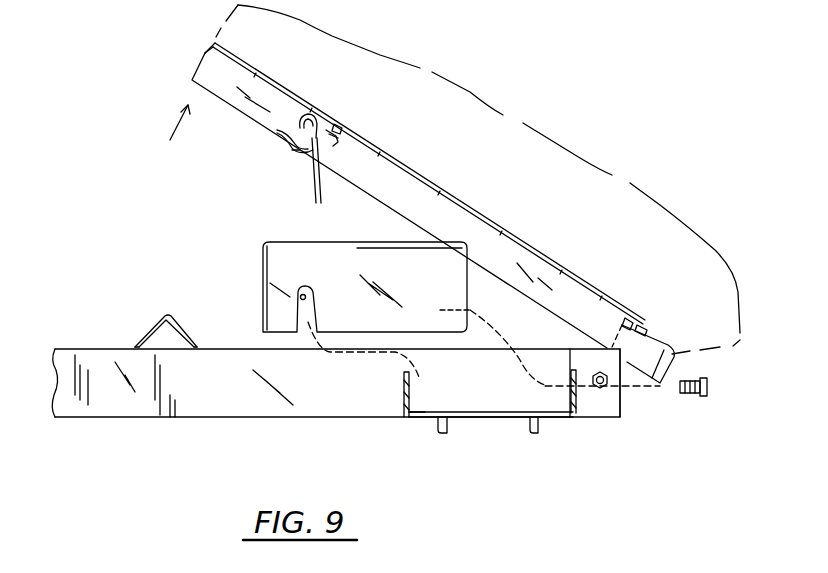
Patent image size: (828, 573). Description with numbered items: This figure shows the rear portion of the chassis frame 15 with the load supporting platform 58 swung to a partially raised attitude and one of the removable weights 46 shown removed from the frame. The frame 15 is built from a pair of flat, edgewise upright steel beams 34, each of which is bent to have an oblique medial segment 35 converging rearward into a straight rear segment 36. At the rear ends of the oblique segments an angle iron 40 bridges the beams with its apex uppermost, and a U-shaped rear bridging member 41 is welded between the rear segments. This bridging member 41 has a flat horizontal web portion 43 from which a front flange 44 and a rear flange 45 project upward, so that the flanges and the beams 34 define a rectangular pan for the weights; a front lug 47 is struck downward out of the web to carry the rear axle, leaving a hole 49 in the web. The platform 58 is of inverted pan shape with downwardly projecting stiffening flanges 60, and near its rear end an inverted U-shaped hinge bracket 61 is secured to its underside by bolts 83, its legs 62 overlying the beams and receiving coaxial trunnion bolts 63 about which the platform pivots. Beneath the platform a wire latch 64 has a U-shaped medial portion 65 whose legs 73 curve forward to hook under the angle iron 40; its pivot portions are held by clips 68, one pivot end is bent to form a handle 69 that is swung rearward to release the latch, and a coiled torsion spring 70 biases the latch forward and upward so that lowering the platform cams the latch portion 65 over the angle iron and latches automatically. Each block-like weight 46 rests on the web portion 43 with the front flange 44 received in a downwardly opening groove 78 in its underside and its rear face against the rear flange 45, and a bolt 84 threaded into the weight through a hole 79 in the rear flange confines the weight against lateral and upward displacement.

The frame 15 is at (622, 418).
The beam 34 is at (240, 420).
The oblique medial segment 35 is at (130, 397).
The rear segment 36 is at (290, 412).
The angle iron 40 is at (152, 320).
The U-shaped rear bridging member 41 is at (399, 415).
The web portion 43 is at (427, 410).
The front flange 44 is at (402, 384).
The rear flange 45 is at (572, 350).
The weight 46 is at (360, 242).
The front lug 47 is at (440, 430).
The hole 49 is at (498, 398).
The load supporting platform 58 is at (446, 198).
The flange 60 is at (534, 278).
The hinge bracket 61 is at (624, 318).
The leg 62 is at (600, 330).
The trunnion bolt 63 is at (610, 380).
The latch 64 is at (275, 149).
The U-shaped medial portion 65 is at (277, 133).
The clip 68 is at (336, 146).
The handle 69 is at (312, 181).
The coiled torsion spring 70 is at (307, 116).
The leg 73 is at (296, 151).
The groove 78 is at (300, 297).
The hole 79 is at (578, 392).
The bolt 83 is at (340, 128).
The bolt 84 is at (708, 387).